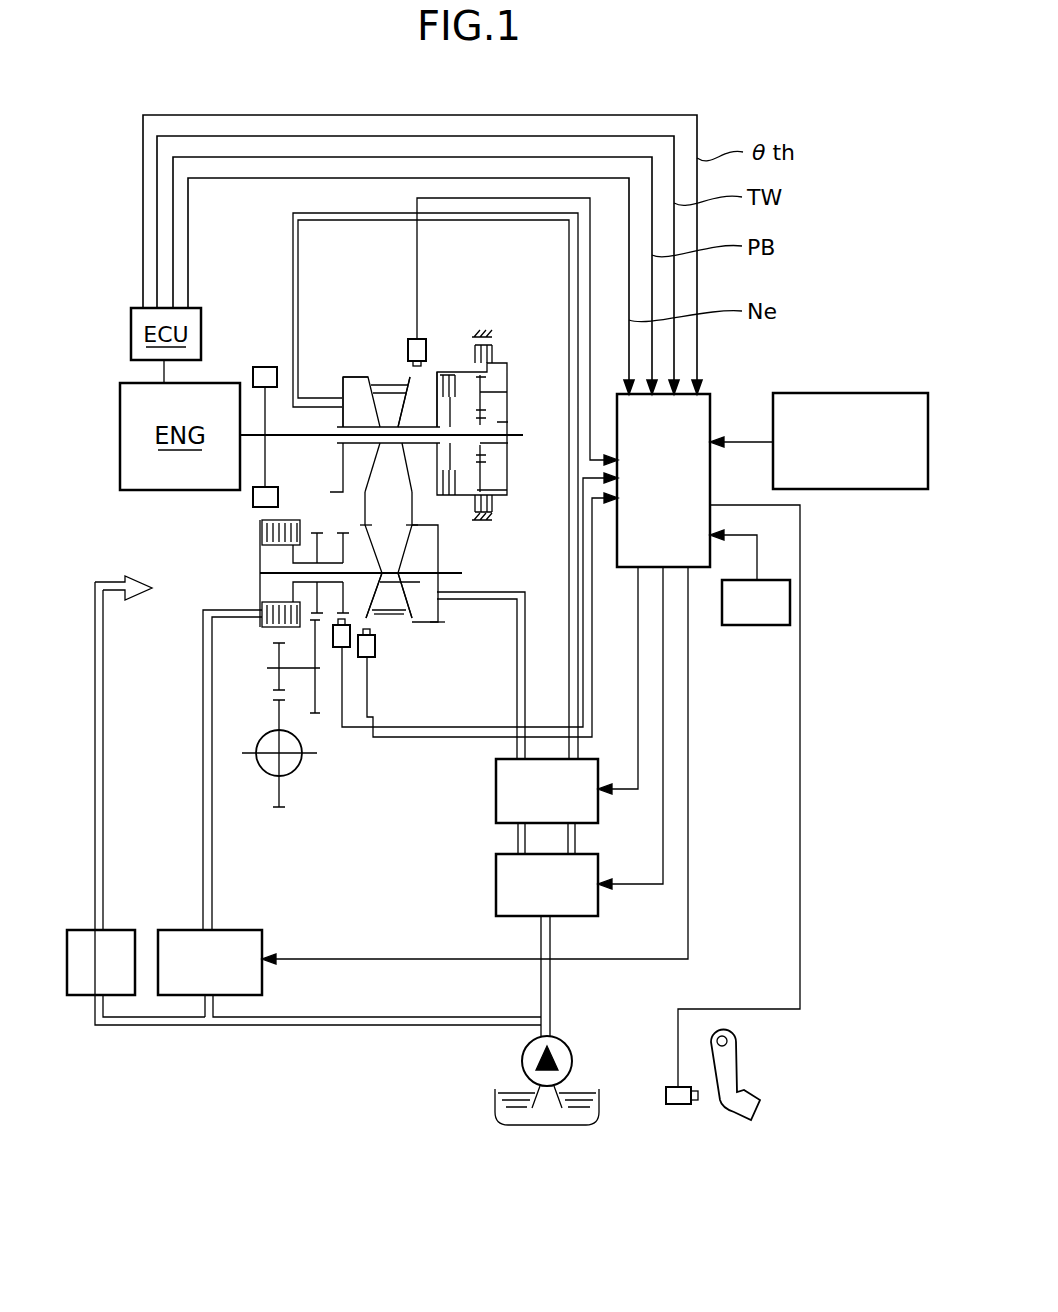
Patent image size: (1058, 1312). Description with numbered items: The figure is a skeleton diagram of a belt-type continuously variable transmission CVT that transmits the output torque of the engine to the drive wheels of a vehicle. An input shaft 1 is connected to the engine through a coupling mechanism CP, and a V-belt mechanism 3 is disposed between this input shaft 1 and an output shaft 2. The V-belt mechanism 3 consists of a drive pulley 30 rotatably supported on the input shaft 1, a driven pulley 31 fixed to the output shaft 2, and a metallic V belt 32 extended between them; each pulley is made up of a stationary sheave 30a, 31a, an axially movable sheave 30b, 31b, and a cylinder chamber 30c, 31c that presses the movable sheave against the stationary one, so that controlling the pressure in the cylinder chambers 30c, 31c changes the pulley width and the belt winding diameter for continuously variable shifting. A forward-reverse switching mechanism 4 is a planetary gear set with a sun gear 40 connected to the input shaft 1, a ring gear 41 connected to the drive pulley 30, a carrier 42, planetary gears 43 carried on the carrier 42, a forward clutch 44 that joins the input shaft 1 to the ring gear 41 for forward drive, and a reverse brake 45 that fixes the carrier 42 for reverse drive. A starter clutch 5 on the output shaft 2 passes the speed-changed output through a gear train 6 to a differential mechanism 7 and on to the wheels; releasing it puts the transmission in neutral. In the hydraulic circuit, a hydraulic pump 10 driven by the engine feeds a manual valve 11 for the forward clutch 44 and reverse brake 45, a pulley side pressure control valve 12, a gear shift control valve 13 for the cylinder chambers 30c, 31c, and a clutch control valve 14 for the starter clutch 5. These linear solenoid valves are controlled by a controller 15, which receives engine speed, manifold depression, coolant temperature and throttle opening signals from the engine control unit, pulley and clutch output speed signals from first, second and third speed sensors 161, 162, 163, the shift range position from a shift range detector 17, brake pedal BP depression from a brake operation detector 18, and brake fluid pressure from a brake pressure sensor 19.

The input shaft 1 is at (257, 433).
The output shaft 2 is at (462, 573).
The V-belt mechanism 3 is at (352, 286).
The forward-reverse switching mechanism 4 is at (500, 286).
The starter clutch 5 is at (265, 627).
The gear train 6 is at (256, 698).
The differential mechanism 7 is at (302, 770).
The hydraulic pump 10 is at (565, 1030).
The manual valve 11 is at (88, 974).
The pulley side pressure control valve 12 is at (534, 897).
The gear shift control valve 13 is at (534, 803).
The clutch control valve 14 is at (197, 974).
The controller 15 is at (649, 493).
The first speed sensor 161 is at (428, 338).
The second speed sensor 162 is at (367, 660).
The third speed sensor 163 is at (337, 650).
The shift range detector 17 is at (757, 627).
The brake operation detector 18 is at (662, 1105).
The brake pressure sensor 19 is at (848, 393).
The drive pulley 30 is at (318, 462).
The stationary sheave 30a is at (413, 377).
The movable sheave 30b is at (350, 377).
The cylinder chamber 30c is at (340, 385).
The driven pulley 31 is at (462, 645).
The stationary sheave 31a is at (367, 620).
The movable sheave 31b is at (427, 623).
The cylinder chamber 31c is at (433, 535).
The metallic V belt 32 is at (376, 516).
The sun gear 40 is at (482, 418).
The ring gear 41 is at (494, 495).
The carrier 42 is at (507, 455).
The planetary gears 43 is at (490, 385).
The forward clutch 44 is at (440, 375).
The reverse brake 45 is at (490, 352).
The coupling mechanism CP is at (265, 367).
The continuously variable transmission CVT is at (232, 555).
The brake pedal BP is at (737, 1055).